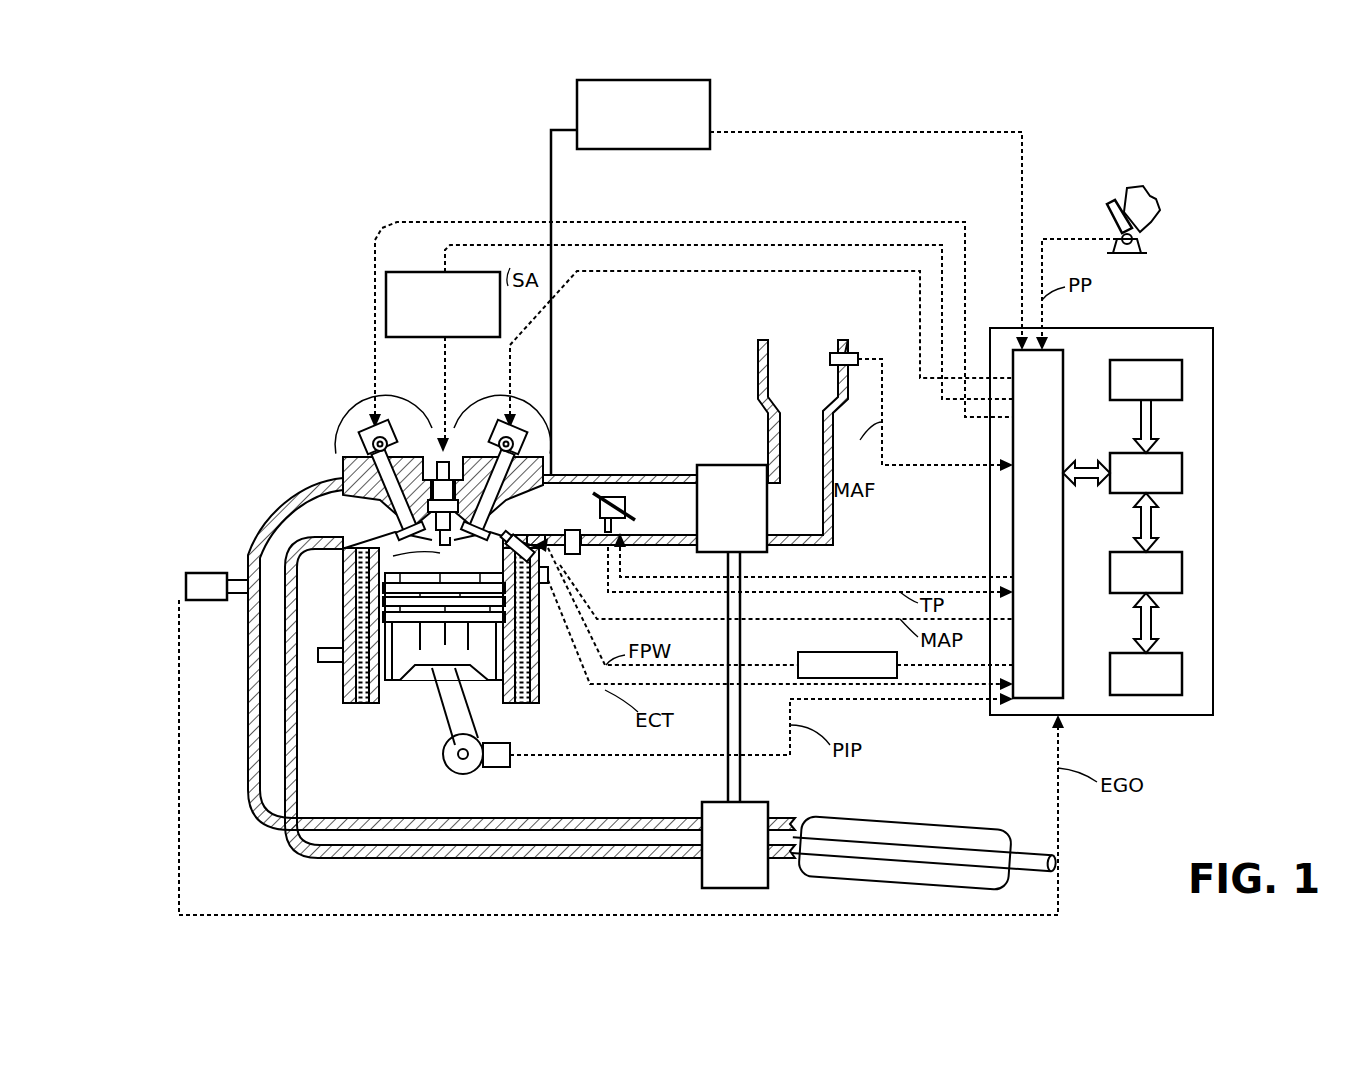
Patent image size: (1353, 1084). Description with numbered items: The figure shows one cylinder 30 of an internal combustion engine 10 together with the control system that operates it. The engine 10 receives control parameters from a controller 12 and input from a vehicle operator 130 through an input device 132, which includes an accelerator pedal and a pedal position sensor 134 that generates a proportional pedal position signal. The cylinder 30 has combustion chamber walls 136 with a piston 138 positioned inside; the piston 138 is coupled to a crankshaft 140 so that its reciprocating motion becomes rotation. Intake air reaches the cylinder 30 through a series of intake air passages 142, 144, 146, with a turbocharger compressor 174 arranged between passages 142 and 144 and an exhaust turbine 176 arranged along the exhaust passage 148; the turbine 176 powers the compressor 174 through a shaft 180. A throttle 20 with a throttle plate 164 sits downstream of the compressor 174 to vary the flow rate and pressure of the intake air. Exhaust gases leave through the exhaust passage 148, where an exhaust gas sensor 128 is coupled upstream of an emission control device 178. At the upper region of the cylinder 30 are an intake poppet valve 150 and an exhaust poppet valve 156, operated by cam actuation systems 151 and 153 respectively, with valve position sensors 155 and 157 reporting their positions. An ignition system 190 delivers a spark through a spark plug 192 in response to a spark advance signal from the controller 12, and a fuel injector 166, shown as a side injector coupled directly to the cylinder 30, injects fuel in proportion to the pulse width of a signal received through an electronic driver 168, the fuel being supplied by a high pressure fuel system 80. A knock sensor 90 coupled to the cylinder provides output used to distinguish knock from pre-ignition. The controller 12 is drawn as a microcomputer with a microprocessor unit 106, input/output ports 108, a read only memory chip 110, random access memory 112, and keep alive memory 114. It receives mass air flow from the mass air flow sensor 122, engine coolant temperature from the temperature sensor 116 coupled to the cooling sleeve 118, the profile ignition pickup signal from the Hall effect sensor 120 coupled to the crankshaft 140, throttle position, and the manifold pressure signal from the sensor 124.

The internal combustion engine 10 is at (170, 158).
The controller 12 is at (1213, 330).
The throttle 20 is at (610, 497).
The cylinder 30 is at (421, 534).
The high pressure fuel system 80 is at (710, 100).
The knock sensor 90 is at (330, 662).
The microprocessor unit 106 is at (1182, 470).
The input/output ports 108 is at (1065, 356).
The read only memory chip 110 is at (1182, 380).
The random access memory 112 is at (1182, 572).
The keep alive memory 114 is at (1182, 675).
The temperature sensor 116 is at (543, 585).
The cooling sleeve 118 is at (540, 702).
The Hall effect sensor 120 is at (497, 768).
The mass air flow sensor 122 is at (852, 352).
The manifold pressure sensor 124 is at (576, 556).
The exhaust gas sensor 128 is at (186, 585).
The vehicle operator 130 is at (1150, 195).
The input device 132 is at (1107, 215).
The pedal position sensor 134 is at (1135, 239).
The combustion chamber walls 136 is at (366, 705).
The piston 138 is at (432, 657).
The crankshaft 140 is at (452, 772).
The intake air passage 142 is at (803, 442).
The intake air passage 144 is at (658, 509).
The intake air passage 146 is at (612, 510).
The exhaust passage 148 is at (475, 668).
The intake poppet valve 150 is at (462, 498).
The cam actuation system 151 is at (505, 425).
The cam actuation system 153 is at (378, 425).
The valve position sensor 155 is at (538, 448).
The exhaust poppet valve 156 is at (348, 478).
The valve position sensor 157 is at (352, 445).
The throttle plate 164 is at (598, 500).
The fuel injector 166 is at (522, 537).
The electronic driver 168 is at (801, 652).
The compressor 174 is at (735, 465).
The exhaust turbine 176 is at (702, 862).
The emission control device 178 is at (965, 822).
The shaft 180 is at (745, 772).
The ignition system 190 is at (402, 272).
The spark plug 192 is at (433, 488).